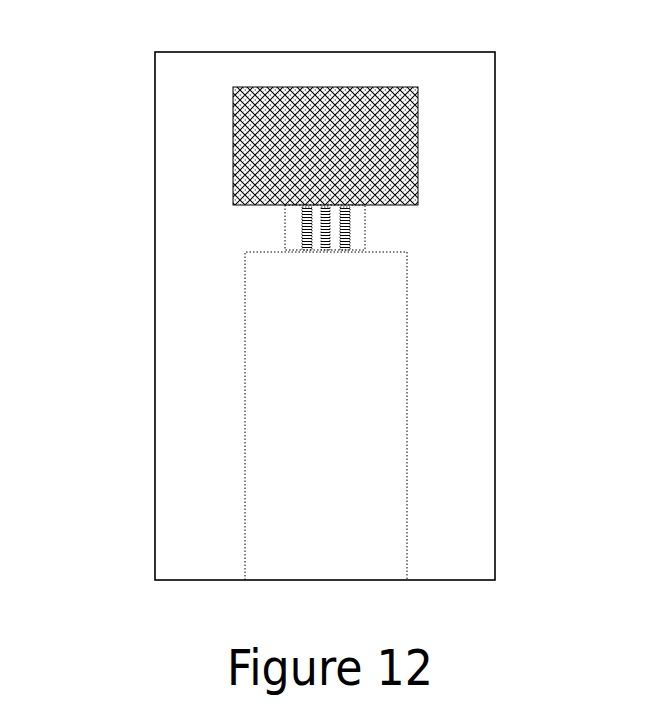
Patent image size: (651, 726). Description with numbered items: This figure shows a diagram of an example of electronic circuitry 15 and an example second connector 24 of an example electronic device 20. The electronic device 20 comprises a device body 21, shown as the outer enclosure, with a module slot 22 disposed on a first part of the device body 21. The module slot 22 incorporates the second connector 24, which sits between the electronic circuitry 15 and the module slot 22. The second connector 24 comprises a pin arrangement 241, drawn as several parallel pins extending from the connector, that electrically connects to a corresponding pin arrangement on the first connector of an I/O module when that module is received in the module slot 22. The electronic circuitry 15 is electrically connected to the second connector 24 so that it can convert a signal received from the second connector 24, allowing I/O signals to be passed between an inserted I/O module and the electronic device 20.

The electronic device 20 is at (155, 115).
The device body 21 is at (178, 172).
The electronic circuitry 15 is at (375, 143).
The second connector 24 is at (288, 220).
The pin arrangement 241 is at (348, 217).
The module slot 22 is at (270, 345).